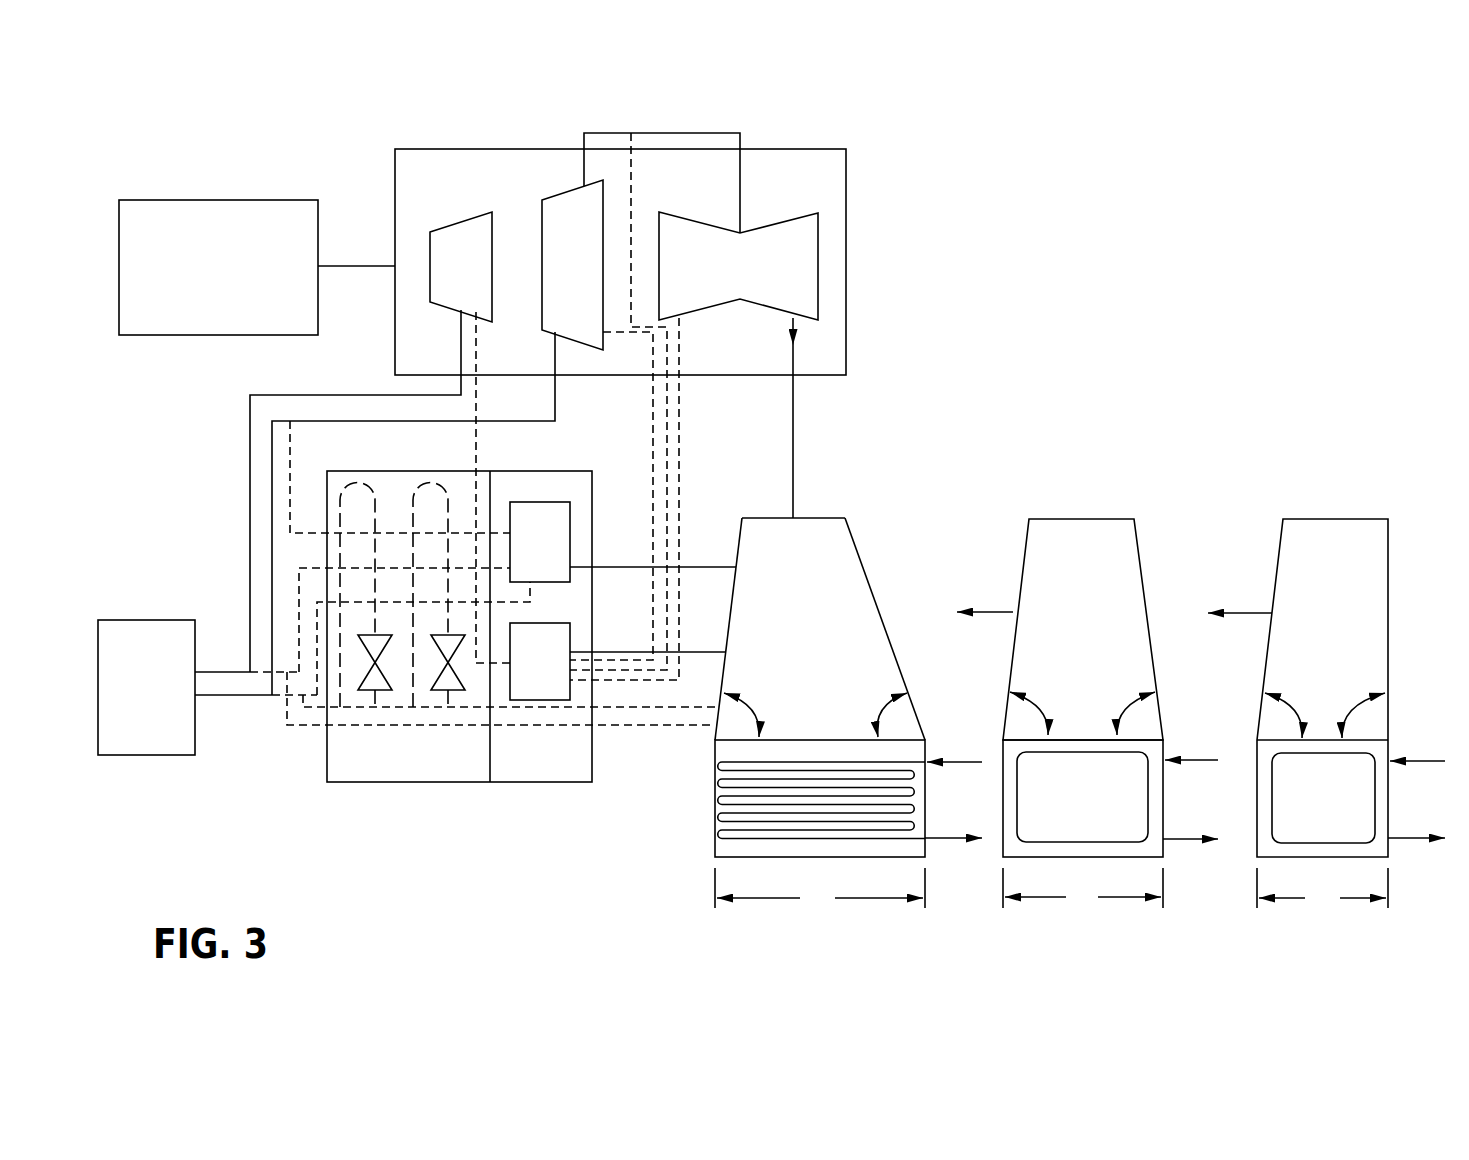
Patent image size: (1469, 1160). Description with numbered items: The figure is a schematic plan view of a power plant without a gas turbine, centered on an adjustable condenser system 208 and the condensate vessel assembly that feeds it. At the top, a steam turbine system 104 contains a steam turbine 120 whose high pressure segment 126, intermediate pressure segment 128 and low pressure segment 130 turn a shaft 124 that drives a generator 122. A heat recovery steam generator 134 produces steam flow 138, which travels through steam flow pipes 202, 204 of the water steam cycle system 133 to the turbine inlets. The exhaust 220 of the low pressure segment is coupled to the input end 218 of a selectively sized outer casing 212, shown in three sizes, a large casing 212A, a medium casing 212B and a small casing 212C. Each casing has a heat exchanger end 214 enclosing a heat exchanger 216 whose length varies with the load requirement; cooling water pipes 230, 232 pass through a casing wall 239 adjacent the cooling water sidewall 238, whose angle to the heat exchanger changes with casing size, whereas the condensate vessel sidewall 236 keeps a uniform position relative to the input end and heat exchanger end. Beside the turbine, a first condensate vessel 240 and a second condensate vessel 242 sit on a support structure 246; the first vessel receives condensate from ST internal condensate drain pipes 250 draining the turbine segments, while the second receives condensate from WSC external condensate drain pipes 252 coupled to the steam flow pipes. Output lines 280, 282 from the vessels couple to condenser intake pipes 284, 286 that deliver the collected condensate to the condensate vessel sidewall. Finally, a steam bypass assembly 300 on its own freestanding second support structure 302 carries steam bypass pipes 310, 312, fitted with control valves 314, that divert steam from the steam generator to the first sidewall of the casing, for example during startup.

The steam turbine system 104 is at (770, 191).
The steam turbine 120 is at (846, 128).
The generator 122 is at (202, 297).
The shaft 124 is at (353, 264).
The high pressure segment 126 is at (441, 279).
The intermediate pressure segment 128 is at (551, 279).
The low pressure segment 130 is at (766, 271).
The water steam cycle system 133 is at (240, 413).
The heat recovery steam generator 134 is at (128, 719).
The steam flow 138 is at (232, 690).
The steam flow pipe 202 is at (250, 542).
The steam flow pipe 204 is at (268, 510).
The adjustable condenser system 208 is at (697, 915).
The selectively sized outer casing 212 is at (1051, 714).
The large casing 212A is at (753, 657).
The medium casing 212B is at (1026, 666).
The small casing 212C is at (1271, 673).
The heat exchanger end 214 is at (714, 822).
The heat exchanger 216 is at (714, 800).
The input end 218 is at (833, 514).
The exhaust 220 is at (797, 328).
The cooling water pipe 230 is at (960, 760).
The cooling water pipe 232 is at (947, 842).
The condensate vessel sidewall 236 is at (714, 739).
The cooling water sidewall 238 is at (858, 597).
The casing wall 239 is at (927, 788).
The first condensate vessel 240 is at (521, 555).
The second condensate vessel 242 is at (521, 675).
The support structure 246 is at (537, 782).
The ST internal condensate drain pipe 250 is at (654, 410).
The WSC external condensate drain pipe 252 is at (317, 612).
The output line 280 is at (610, 565).
The output line 282 is at (610, 650).
The condenser intake pipe 284 is at (698, 565).
The condenser intake pipe 286 is at (695, 650).
The steam bypass assembly 300 is at (455, 788).
The second support structure 302 is at (325, 752).
The steam bypass pipe 310 is at (388, 722).
The steam bypass pipe 312 is at (395, 708).
The control valve 314 is at (378, 662).